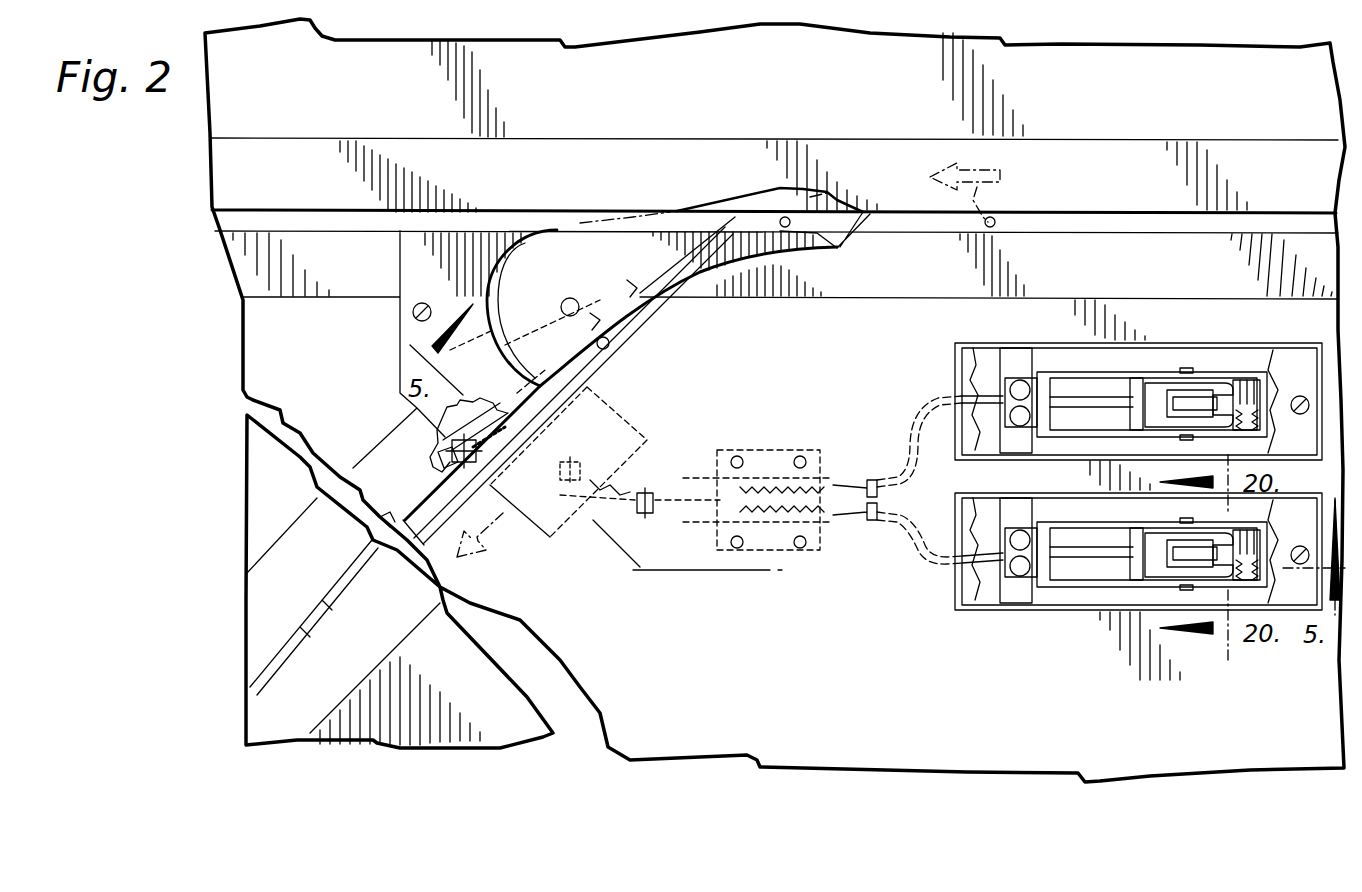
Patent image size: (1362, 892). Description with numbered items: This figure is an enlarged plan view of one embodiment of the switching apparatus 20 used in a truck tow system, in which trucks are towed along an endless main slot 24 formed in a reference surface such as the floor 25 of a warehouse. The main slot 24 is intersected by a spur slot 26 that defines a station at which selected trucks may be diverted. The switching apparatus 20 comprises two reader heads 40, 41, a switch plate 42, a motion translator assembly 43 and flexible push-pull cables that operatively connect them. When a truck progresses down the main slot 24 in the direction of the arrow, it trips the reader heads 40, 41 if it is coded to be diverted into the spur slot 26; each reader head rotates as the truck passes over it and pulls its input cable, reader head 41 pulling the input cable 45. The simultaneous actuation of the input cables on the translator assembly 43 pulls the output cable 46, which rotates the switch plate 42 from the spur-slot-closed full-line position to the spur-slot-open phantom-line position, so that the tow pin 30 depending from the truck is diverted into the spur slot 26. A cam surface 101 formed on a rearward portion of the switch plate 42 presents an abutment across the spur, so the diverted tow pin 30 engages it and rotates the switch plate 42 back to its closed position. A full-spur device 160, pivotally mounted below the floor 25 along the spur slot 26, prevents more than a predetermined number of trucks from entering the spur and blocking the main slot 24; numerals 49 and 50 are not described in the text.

The switching apparatus 20 is at (728, 602).
The main slot 24 is at (290, 222).
The floor 25 is at (1267, 177).
The spur slot 26 is at (445, 503).
The tow pin 30 is at (412, 512).
The reader head 40 is at (1167, 570).
The reader head 41 is at (1207, 380).
The switch plate 42 is at (563, 242).
The motion translator assembly 43 is at (744, 437).
The input cable 45 is at (900, 440).
The output cable 46 is at (623, 487).
The tube 49 is at (907, 553).
The mount 50 is at (1019, 619).
The cam surface 101 is at (585, 368).
The full-spur device 160 is at (232, 691).